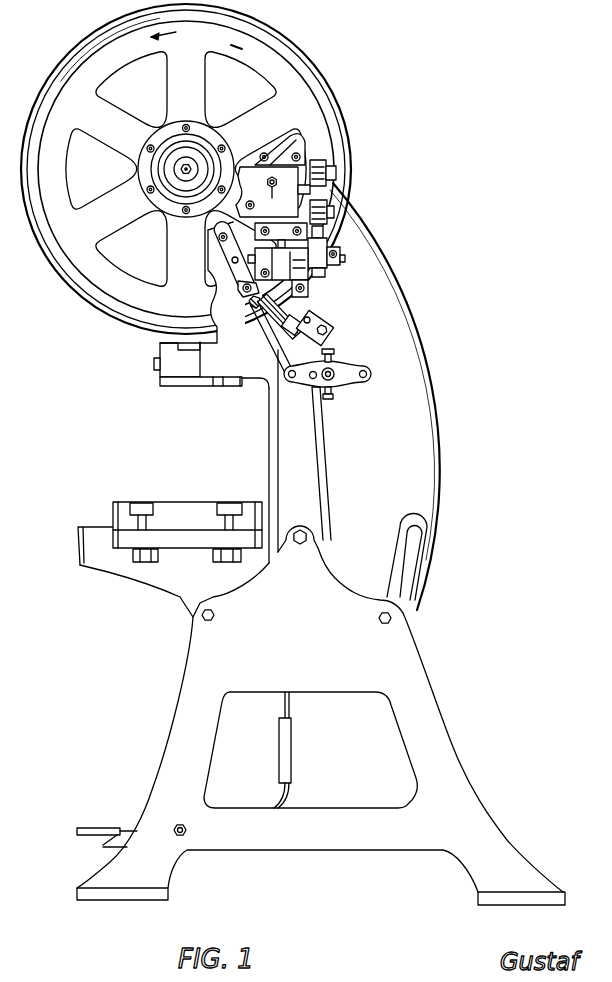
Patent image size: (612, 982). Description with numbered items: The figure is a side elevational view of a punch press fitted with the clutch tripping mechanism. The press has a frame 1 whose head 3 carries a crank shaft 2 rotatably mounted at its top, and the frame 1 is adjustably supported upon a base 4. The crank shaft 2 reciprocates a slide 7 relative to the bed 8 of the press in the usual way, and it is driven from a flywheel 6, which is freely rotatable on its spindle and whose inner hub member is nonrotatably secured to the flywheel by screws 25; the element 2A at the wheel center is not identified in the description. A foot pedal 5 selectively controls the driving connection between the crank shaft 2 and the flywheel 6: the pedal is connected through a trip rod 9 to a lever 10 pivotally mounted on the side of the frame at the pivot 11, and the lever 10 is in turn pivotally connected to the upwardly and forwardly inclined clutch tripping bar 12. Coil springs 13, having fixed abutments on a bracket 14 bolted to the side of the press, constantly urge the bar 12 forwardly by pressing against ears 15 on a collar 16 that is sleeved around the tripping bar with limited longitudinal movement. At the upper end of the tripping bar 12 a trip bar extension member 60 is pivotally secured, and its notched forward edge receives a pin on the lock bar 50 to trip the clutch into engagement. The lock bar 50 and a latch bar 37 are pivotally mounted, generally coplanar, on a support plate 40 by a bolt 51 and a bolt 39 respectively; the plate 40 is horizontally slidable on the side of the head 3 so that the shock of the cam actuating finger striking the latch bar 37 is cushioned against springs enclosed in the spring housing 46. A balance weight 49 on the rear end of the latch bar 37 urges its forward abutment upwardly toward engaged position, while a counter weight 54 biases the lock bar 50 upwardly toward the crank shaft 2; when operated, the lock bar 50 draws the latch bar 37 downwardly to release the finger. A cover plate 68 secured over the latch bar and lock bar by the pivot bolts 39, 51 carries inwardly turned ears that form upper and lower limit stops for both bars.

The frame 1 is at (415, 463).
The crank shaft 2 is at (178, 171).
The hub flange 2A is at (160, 142).
The head 3 is at (186, 169).
The base 4 is at (413, 665).
The foot pedal 5 is at (100, 830).
The flywheel 6 is at (82, 284).
The slide 7 is at (158, 383).
The bed 8 is at (182, 505).
The trip rod 9 is at (322, 461).
The lever 10 is at (338, 389).
The pivot 11 is at (372, 380).
The clutch tripping bar 12 is at (277, 350).
The coil springs 13 is at (262, 303).
The bracket 14 is at (330, 318).
The ears 15 is at (247, 302).
The collar 16 is at (242, 288).
The screws 25 is at (148, 197).
The latch bar 37 is at (300, 173).
The bolt 39 is at (283, 196).
The support plate 40 is at (300, 190).
The spring housing 46 is at (312, 284).
The balance weight 49 is at (327, 171).
The lock bar 50 is at (336, 244).
The bolt 51 is at (207, 227).
The counter weight 54 is at (328, 221).
The trip bar extension member 60 is at (215, 252).
The cover plate 68 is at (264, 175).